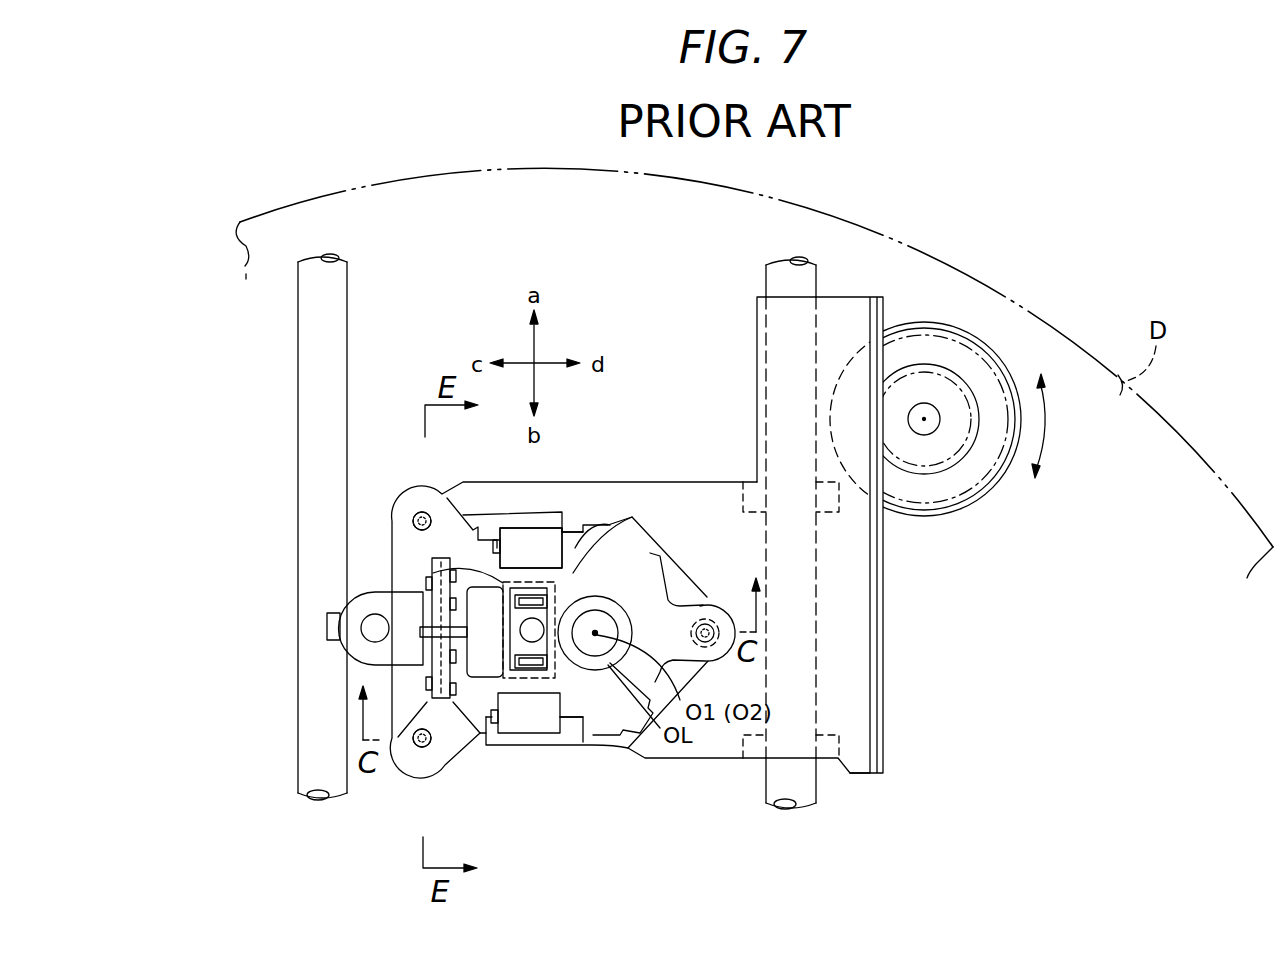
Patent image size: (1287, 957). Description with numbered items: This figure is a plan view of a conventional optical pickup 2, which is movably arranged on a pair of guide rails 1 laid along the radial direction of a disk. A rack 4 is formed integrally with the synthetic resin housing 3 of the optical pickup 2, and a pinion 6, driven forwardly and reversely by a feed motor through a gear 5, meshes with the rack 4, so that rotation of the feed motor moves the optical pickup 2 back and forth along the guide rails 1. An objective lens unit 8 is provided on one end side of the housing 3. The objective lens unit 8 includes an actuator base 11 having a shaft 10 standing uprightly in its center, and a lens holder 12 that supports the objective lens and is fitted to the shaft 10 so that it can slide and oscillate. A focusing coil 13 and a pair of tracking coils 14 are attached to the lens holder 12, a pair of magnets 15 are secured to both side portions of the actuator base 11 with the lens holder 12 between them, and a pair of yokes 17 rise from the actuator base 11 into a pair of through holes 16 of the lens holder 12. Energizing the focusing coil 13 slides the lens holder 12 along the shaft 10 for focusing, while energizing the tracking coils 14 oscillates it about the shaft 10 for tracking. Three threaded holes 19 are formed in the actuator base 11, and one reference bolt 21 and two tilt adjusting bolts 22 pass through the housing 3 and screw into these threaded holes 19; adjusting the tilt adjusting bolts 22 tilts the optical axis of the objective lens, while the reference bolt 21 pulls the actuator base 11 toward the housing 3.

The guide rails 1 is at (312, 313).
The optical pickup 2 is at (668, 765).
The housing 3 is at (507, 537).
The rack 4 is at (883, 655).
The gear 5 is at (987, 497).
The pinion 6 is at (947, 470).
The objective lens unit 8 is at (668, 600).
The shaft 10 is at (629, 597).
The actuator base 11 is at (595, 732).
The lens holder 12 is at (625, 636).
The focusing coil 13 is at (425, 580).
The tracking coils 14 is at (600, 560).
The magnets 15 is at (550, 553).
The through holes 16 is at (577, 537).
The yokes 17 is at (427, 573).
The threaded holes 19 is at (425, 510).
The reference bolt 21 is at (727, 615).
The tilt adjusting bolts 22 is at (414, 514).